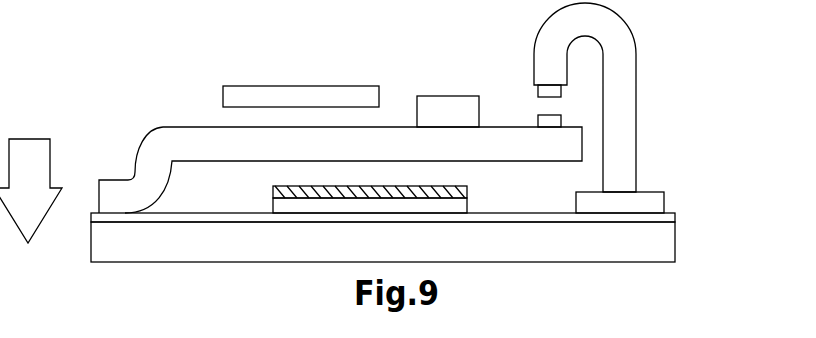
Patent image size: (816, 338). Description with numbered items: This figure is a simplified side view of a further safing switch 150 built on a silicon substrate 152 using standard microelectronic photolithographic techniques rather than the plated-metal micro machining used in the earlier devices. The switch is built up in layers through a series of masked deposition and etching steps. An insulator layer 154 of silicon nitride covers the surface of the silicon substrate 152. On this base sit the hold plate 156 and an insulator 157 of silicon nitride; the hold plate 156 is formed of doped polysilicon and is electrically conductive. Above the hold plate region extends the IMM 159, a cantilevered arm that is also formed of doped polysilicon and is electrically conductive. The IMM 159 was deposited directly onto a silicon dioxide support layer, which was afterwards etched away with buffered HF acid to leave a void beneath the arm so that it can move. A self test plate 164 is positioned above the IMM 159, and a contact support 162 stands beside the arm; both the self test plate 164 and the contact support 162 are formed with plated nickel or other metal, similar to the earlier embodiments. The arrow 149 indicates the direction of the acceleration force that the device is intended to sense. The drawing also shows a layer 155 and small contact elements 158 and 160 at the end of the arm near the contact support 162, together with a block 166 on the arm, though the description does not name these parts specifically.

The arrow 149 is at (33, 153).
The safing switch 150 is at (143, 63).
The silicon substrate 152 is at (675, 243).
The insulator layer 154 is at (675, 218).
The electrode layer 155 is at (467, 190).
The hold plate 156 is at (467, 205).
The insulator 157 is at (272, 192).
The upper contact on beam 158 is at (538, 120).
The IMM 159 is at (163, 128).
The fixed contact 160 is at (537, 93).
The contact support 162 is at (636, 135).
The self test plate 164 is at (322, 86).
The mass block 166 is at (417, 112).